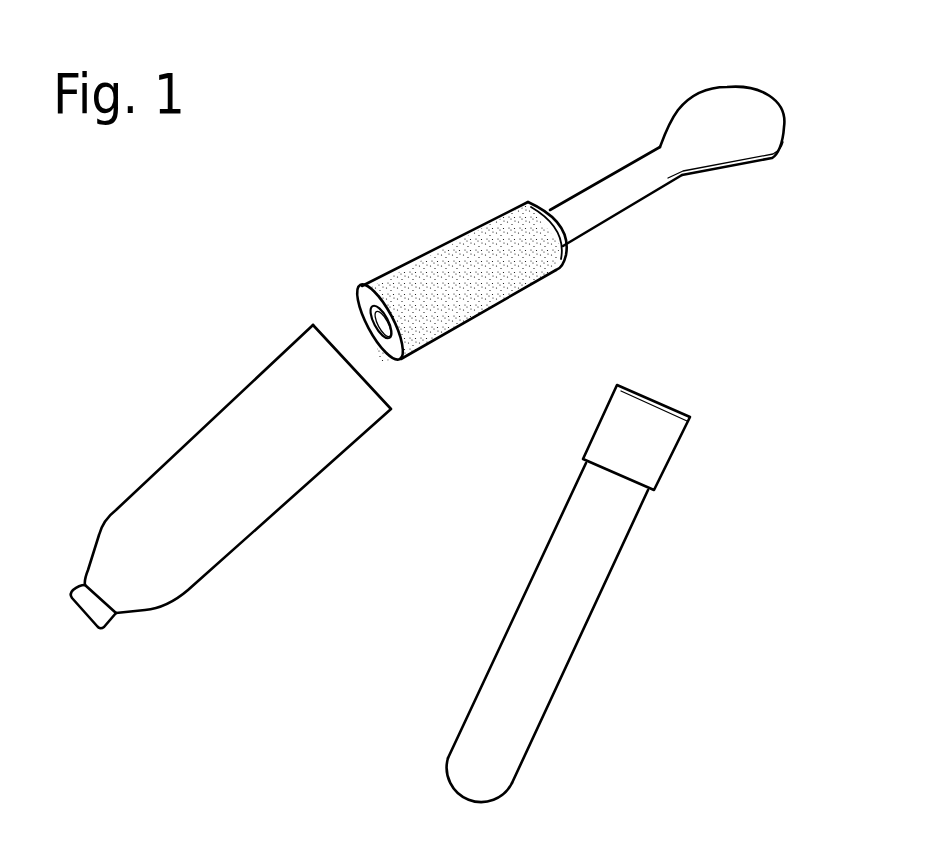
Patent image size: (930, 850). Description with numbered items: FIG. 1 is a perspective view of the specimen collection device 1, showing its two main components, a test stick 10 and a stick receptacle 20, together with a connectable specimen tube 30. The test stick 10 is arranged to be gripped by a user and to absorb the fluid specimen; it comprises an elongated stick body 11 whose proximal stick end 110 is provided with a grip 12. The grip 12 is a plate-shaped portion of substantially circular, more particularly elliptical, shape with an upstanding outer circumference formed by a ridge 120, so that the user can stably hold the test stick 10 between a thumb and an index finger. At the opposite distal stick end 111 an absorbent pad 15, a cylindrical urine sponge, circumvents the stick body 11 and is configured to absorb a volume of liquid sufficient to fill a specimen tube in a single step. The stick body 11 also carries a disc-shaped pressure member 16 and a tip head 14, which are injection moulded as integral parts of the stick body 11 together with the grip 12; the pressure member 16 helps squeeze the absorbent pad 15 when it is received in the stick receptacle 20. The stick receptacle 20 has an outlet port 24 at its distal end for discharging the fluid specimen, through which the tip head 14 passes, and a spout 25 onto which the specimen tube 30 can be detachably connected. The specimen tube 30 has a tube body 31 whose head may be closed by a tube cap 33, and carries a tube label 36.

The specimen collection device 1 is at (238, 245).
The test stick 10 is at (492, 154).
The stick body 11 is at (628, 185).
The grip 12 is at (718, 120).
The proximal stick end 110 is at (767, 86).
The ridge 120 is at (772, 158).
The tip head 14 is at (380, 322).
The absorbent pad 15 is at (435, 226).
The pressure member 16 is at (550, 216).
The distal stick end 111 is at (422, 369).
The stick receptacle 20 is at (192, 418).
The outlet port 24 is at (82, 622).
The spout 25 is at (103, 620).
The specimen tube 30 is at (652, 568).
The tube body 31 is at (490, 761).
The tube cap 33 is at (645, 435).
The tube label 36 is at (550, 619).